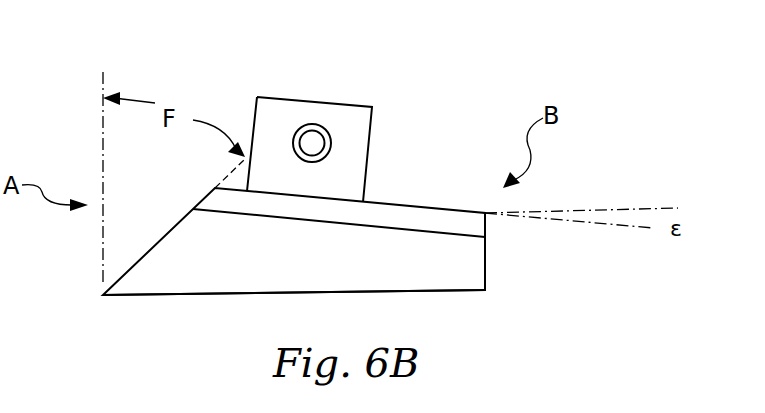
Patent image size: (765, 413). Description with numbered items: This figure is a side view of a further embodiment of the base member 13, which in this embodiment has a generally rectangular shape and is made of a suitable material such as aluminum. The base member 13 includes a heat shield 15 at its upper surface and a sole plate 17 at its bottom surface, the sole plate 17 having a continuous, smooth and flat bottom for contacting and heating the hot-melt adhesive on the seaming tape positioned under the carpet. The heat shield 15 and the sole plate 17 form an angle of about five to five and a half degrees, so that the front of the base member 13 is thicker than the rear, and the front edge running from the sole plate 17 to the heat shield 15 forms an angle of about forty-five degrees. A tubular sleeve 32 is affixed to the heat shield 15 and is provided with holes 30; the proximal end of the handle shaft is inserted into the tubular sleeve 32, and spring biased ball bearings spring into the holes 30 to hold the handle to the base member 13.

The base member 13 is at (132, 266).
The heat shield 15 is at (455, 221).
The sole plate 17 is at (248, 295).
The holes 30 is at (315, 125).
The tubular sleeve 32 is at (353, 138).